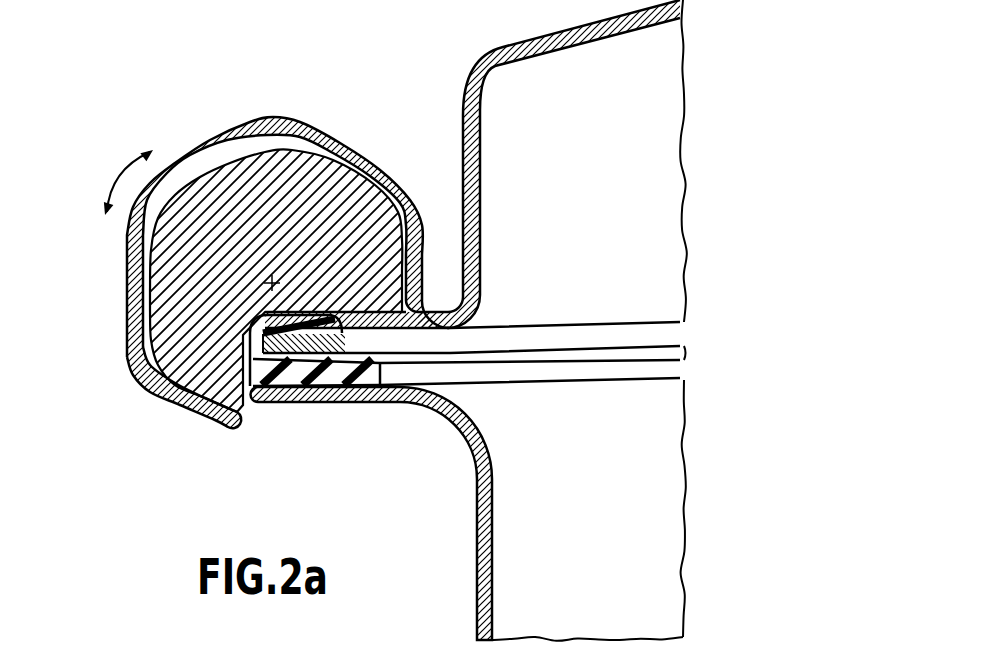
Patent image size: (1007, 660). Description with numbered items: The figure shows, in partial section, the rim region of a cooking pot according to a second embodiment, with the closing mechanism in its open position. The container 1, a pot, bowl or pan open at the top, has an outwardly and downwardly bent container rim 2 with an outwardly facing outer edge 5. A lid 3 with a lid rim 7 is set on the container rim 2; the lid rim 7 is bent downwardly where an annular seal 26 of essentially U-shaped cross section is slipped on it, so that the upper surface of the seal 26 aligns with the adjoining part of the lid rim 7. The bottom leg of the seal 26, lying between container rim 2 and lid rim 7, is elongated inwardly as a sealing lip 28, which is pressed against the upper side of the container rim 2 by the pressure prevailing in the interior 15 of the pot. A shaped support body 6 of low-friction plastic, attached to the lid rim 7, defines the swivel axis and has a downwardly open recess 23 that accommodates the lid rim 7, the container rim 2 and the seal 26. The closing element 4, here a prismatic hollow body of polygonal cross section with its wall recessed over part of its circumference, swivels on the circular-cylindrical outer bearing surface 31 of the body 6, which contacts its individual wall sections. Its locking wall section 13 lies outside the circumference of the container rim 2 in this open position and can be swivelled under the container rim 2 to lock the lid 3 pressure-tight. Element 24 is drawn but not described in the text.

The container 1 is at (460, 491).
The container rim 2 is at (392, 404).
The lid 3 is at (555, 50).
The closing element 4 is at (288, 272).
The outer edge 5 is at (258, 403).
The shaped support body 6 is at (276, 261).
The lid rim 7 is at (432, 320).
The locking wall section 13 is at (222, 422).
The interior 15 is at (601, 515).
The recess 23 is at (247, 388).
The panel wall 24 is at (487, 557).
The annular seal 26 is at (381, 343).
The sealing lip 28 is at (366, 402).
The outer bearing surface 31 is at (150, 236).